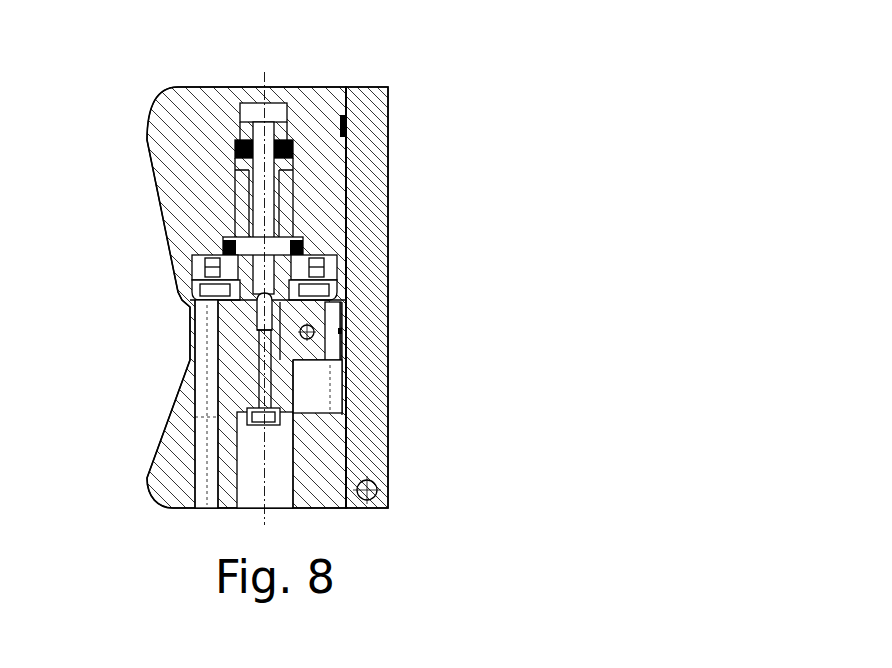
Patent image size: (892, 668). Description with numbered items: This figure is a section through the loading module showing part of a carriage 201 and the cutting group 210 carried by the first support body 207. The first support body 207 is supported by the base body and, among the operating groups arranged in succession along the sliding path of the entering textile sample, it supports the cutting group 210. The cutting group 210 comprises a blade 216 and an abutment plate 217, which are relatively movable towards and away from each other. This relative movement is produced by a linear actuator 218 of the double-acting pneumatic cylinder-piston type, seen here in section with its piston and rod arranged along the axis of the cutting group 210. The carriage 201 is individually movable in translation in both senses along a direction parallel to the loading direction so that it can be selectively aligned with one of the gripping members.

The carriage 201 is at (292, 281).
The first support body 207 is at (387, 453).
The cutting group 210 is at (170, 508).
The blade 216 is at (200, 302).
The abutment plate 217 is at (345, 312).
The linear actuator 218 is at (287, 225).